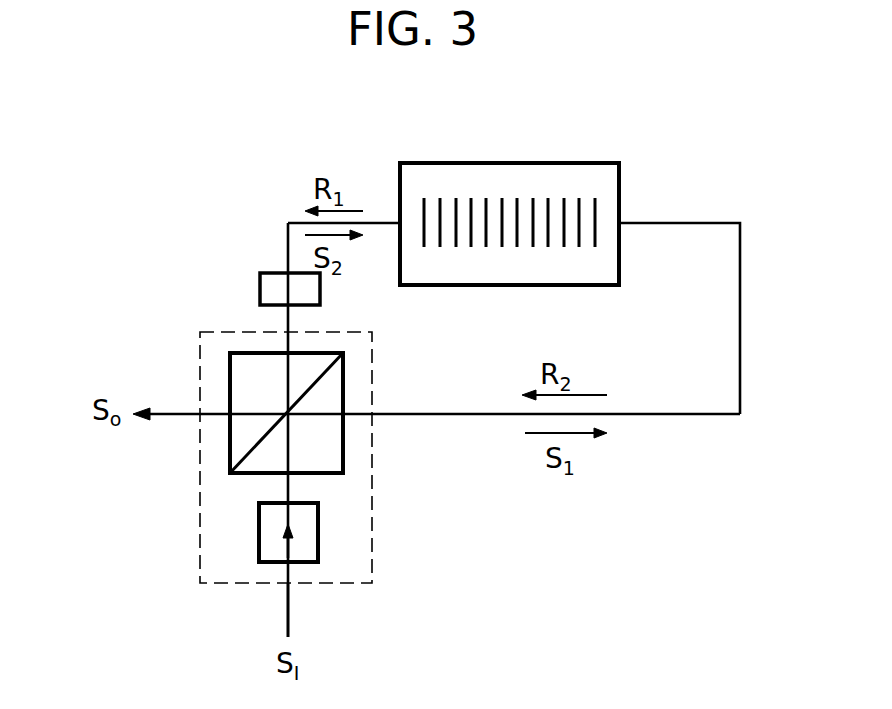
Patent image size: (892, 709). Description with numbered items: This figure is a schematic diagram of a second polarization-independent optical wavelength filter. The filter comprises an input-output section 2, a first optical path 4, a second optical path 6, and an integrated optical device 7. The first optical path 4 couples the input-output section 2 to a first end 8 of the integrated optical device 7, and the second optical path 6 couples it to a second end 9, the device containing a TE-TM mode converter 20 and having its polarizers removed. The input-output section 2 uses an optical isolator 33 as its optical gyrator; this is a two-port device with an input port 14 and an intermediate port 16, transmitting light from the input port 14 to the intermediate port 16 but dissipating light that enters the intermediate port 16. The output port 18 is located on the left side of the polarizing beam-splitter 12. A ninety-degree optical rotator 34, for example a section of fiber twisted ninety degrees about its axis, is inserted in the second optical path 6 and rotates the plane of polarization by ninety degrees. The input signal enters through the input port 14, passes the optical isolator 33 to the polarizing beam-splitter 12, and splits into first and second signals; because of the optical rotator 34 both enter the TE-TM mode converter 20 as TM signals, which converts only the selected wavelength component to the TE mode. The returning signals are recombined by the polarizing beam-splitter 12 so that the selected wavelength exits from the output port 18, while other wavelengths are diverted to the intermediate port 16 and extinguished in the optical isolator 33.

The input-output section 2 is at (197, 495).
The first optical path 4 is at (741, 299).
The second optical path 6 is at (282, 248).
The integrated optical device 7 is at (573, 287).
The first end 8 is at (620, 182).
The second end 9 is at (400, 192).
The polarizing beam-splitter 12 is at (345, 375).
The input port 14 is at (288, 603).
The intermediate port 16 is at (288, 488).
The output port 18 is at (182, 413).
The TE-TM mode converter 20 is at (567, 200).
The optical isolator 33 is at (320, 538).
The ninety-degree optical rotator 34 is at (258, 292).